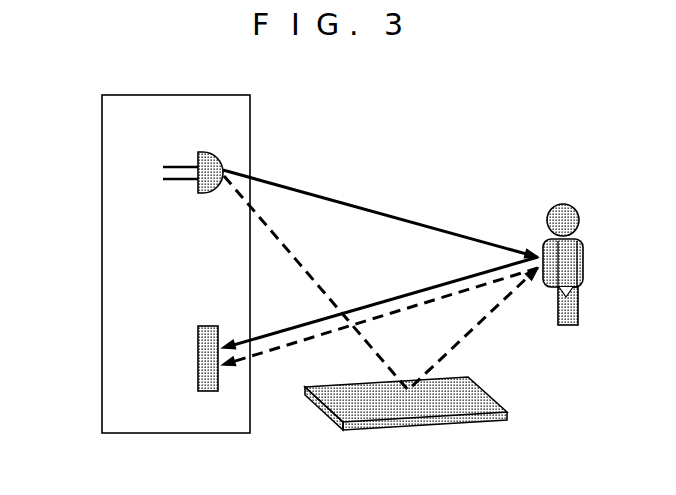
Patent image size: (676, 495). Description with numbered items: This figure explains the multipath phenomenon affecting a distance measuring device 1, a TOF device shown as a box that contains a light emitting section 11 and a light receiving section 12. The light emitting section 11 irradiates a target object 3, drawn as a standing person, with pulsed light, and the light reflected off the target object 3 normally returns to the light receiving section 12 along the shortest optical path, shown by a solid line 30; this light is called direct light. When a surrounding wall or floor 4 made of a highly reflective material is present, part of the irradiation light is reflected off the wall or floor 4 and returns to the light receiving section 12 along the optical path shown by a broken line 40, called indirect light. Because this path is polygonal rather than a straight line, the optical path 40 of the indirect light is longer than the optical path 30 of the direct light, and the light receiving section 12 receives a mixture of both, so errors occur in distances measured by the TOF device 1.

The distance measuring device 1 is at (97, 238).
The light emitting section 11 is at (184, 155).
The light receiving section 12 is at (198, 360).
The target object 3 is at (592, 263).
The wall or floor 4 is at (380, 428).
The solid line (optical path of direct light) 30 is at (420, 292).
The broken line (optical path of indirect light) 40 is at (460, 297).